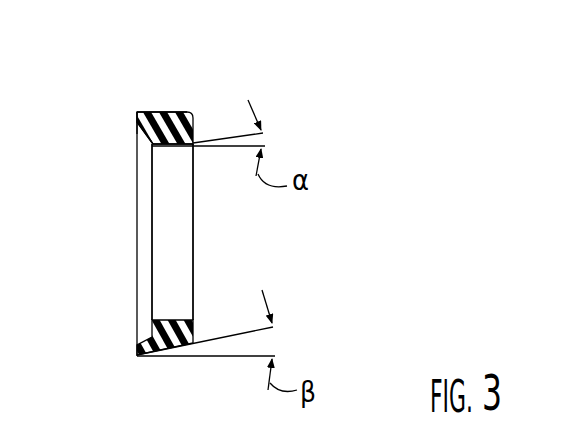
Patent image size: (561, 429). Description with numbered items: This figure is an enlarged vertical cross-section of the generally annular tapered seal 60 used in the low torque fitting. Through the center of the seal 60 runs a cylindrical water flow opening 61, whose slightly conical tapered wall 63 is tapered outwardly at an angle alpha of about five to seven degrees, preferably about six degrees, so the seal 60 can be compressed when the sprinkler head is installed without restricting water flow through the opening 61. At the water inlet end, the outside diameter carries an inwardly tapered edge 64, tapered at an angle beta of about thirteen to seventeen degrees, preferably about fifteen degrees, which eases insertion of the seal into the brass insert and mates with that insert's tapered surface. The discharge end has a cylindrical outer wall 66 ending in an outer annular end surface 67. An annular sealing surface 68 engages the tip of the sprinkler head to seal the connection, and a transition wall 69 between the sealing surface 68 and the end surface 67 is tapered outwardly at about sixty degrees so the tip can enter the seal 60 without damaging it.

The tapered seal 60 is at (182, 88).
The cylindrical water flow opening 61 is at (182, 205).
The tapered wall 63 is at (183, 148).
The inwardly tapered edge 64 is at (186, 112).
The cylindrical outer wall 66 is at (152, 111).
The outer annular end surface 67 is at (136, 121).
The annular sealing surface 68 is at (147, 137).
The transition wall 69 is at (137, 132).